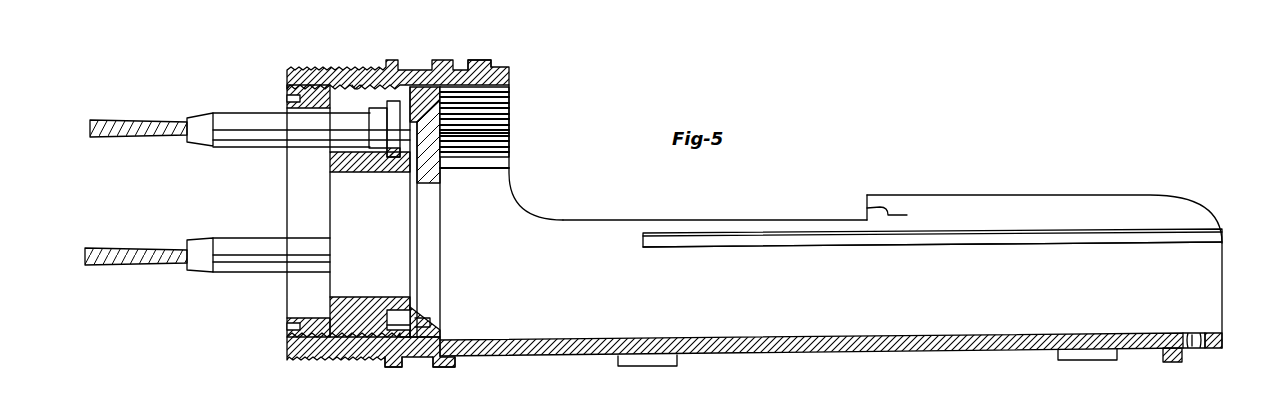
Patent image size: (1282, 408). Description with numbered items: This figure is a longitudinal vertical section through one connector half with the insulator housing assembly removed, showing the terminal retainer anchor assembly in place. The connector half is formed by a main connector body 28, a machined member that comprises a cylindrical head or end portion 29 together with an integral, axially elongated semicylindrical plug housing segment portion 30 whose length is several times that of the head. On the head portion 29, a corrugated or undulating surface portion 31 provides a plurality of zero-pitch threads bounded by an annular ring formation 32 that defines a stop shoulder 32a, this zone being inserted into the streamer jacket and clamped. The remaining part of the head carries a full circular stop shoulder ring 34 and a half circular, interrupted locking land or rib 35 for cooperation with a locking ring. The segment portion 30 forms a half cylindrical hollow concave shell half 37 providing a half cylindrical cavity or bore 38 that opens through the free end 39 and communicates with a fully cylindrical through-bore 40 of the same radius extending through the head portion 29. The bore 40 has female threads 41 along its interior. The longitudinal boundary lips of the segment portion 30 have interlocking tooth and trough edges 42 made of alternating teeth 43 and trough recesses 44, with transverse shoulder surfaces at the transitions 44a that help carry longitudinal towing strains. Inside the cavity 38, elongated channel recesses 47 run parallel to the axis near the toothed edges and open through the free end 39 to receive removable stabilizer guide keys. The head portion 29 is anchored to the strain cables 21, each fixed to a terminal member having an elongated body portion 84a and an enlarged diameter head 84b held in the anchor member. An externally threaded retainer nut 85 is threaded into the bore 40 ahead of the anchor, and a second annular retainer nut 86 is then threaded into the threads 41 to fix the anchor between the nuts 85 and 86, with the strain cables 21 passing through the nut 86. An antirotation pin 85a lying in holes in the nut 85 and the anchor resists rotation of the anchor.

The strain cable 21 is at (130, 137).
The main connector body 28 is at (825, 352).
The cylindrical head or end portion 29 is at (412, 60).
The semicylindrical plug housing segment portion 30 is at (630, 225).
The corrugated or undulating surface portion 31 is at (340, 70).
The annular ring formation 32 is at (400, 368).
The stop shoulder 32a is at (385, 362).
The full circular stop shoulder ring 34 is at (443, 367).
The interrupted locking land or rib 35 is at (478, 62).
The half cylindrical hollow concave shell half 37 is at (905, 336).
The half cylindrical cavity or bore 38 is at (580, 232).
The free end 39 is at (1222, 275).
The fully cylindrical through-bore 40 is at (500, 105).
The female threads 41 is at (362, 85).
The interlocking tooth and trough edges 42 is at (830, 220).
The tooth 43 is at (995, 195).
The trough recess 44 is at (745, 220).
The transition 44a is at (909, 211).
The elongated channel recess 47 is at (855, 245).
The elongated body portion 84a is at (233, 113).
The enlarged diameter head 84b is at (500, 133).
The externally threaded retainer nut 85 is at (440, 308).
The antirotation pin 85a is at (398, 318).
The second annular retainer nut 86 is at (288, 187).